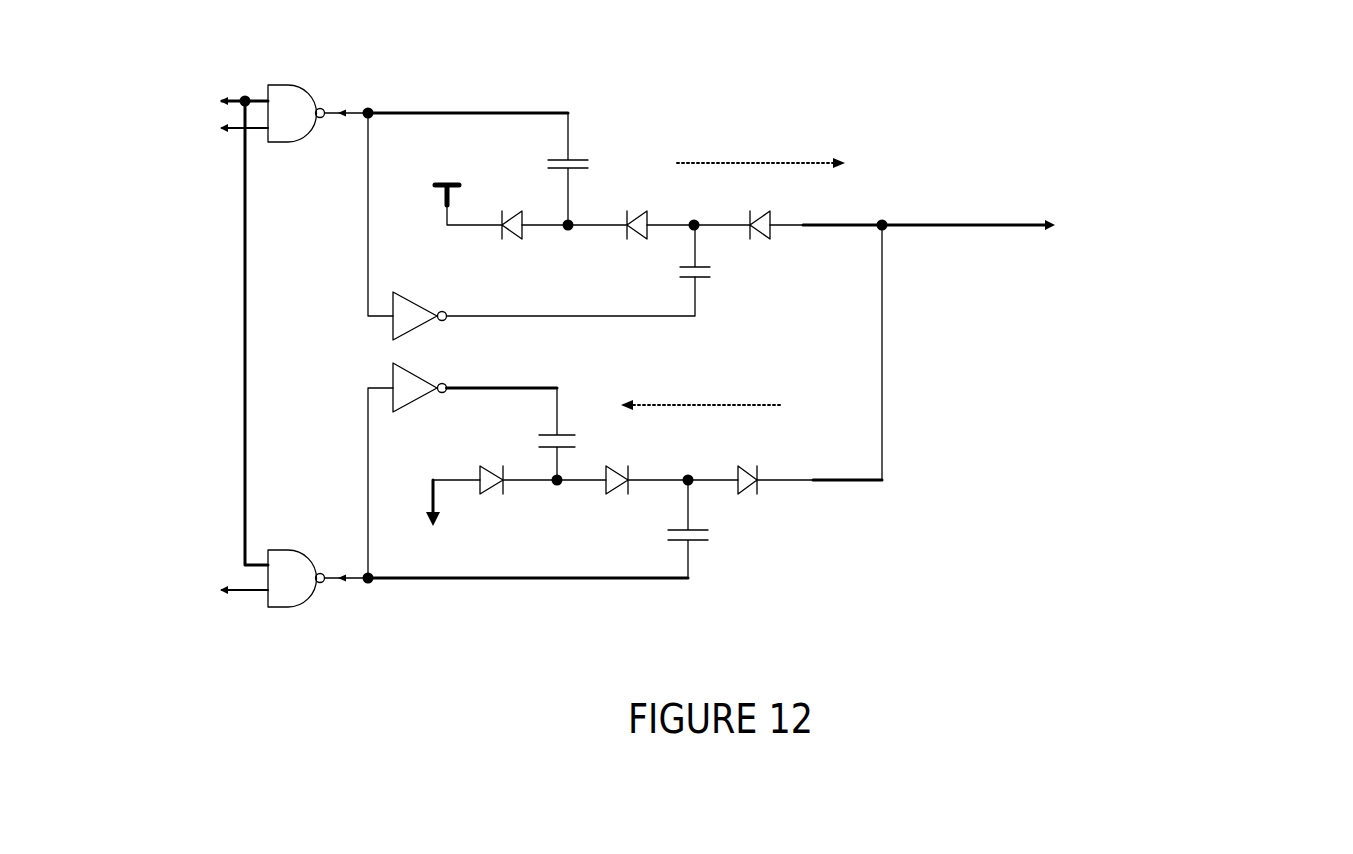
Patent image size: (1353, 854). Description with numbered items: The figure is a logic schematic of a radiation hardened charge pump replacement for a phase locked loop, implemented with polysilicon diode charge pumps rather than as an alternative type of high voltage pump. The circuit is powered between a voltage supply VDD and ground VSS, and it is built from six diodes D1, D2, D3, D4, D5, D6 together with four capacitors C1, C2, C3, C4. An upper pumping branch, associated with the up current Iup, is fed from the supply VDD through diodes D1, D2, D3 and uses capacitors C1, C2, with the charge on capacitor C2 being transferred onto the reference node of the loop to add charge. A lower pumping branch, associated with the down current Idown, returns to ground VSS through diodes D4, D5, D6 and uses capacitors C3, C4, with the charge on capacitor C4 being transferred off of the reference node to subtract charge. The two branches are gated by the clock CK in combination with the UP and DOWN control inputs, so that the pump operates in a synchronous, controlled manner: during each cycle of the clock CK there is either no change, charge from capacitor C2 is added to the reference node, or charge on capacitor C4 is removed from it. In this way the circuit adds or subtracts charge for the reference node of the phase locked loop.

The capacitor C1 is at (592, 169).
The capacitor C2 is at (716, 260).
The capacitor C3 is at (582, 434).
The capacitor C4 is at (713, 529).
The diode D1 is at (494, 246).
The diode D2 is at (621, 246).
The diode D3 is at (748, 207).
The diode D4 is at (477, 459).
The diode D5 is at (603, 504).
The diode D6 is at (733, 459).
The voltage supply VDD is at (430, 173).
The ground VSS is at (426, 522).
The clock CK is at (203, 317).
The UP input UP is at (203, 146).
The DOWN input DOWN is at (170, 592).
The up current Iup is at (761, 142).
The down current Idown is at (701, 383).